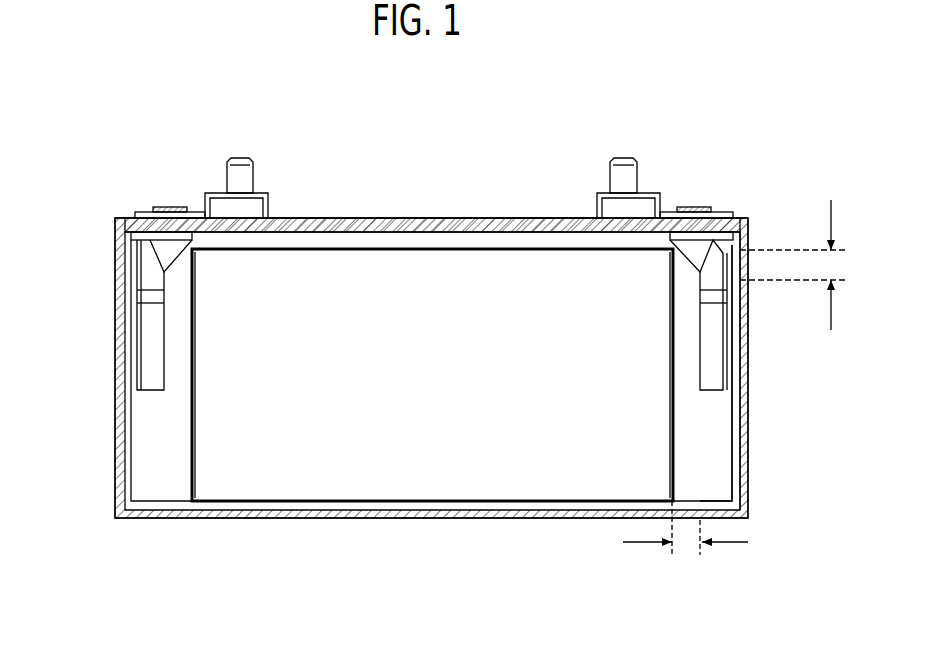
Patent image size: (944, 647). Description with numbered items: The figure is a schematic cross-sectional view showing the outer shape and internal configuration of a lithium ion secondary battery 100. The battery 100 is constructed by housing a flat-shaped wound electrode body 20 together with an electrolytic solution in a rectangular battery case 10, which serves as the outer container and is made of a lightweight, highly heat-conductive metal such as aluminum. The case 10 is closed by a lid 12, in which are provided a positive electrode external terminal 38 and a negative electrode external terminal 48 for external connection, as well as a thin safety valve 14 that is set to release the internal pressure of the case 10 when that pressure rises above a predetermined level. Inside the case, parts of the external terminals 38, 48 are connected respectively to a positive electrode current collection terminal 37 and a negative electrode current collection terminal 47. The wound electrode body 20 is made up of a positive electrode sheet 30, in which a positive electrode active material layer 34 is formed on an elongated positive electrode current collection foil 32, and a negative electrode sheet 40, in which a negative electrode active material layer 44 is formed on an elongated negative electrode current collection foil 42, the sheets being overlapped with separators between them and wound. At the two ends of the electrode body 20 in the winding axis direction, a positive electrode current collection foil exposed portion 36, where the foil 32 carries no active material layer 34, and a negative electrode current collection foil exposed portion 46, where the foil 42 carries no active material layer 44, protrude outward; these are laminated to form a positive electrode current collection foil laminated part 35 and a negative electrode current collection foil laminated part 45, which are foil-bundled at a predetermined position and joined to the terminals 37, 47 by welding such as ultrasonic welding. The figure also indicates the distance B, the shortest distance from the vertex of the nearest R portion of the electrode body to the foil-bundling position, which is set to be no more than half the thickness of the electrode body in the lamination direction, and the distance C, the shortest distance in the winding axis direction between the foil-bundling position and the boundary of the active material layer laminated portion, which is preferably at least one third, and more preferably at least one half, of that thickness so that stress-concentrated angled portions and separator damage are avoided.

The lithium ion secondary battery 100 is at (77, 83).
The battery case 10 is at (119, 211).
The lid 12 is at (523, 214).
The safety valve 14 is at (438, 218).
The wound electrode body 20 is at (330, 243).
The positive electrode sheet 30 is at (395, 416).
The positive electrode current collection foil 32 is at (150, 473).
The positive electrode active material layer 34 is at (280, 477).
The positive electrode current collection foil laminated part 35 is at (120, 405).
The positive electrode current collection foil exposed portion 36 is at (140, 432).
The positive electrode current collection terminal 37 is at (145, 273).
The positive electrode external terminal 38 is at (240, 156).
The negative electrode sheet 40 is at (778, 423).
The negative electrode current collection foil 42 is at (737, 520).
The negative electrode active material layer 44 is at (493, 475).
The negative electrode current collection foil laminated part 45 is at (745, 402).
The negative electrode current collection foil exposed portion 46 is at (713, 453).
The negative electrode current collection terminal 47 is at (722, 280).
The negative electrode external terminal 48 is at (624, 157).
The shortest distance from R portion vertex to foil-bundling position B is at (806, 265).
The shortest distance from foil-bundling position to active material layer boundary C is at (685, 546).